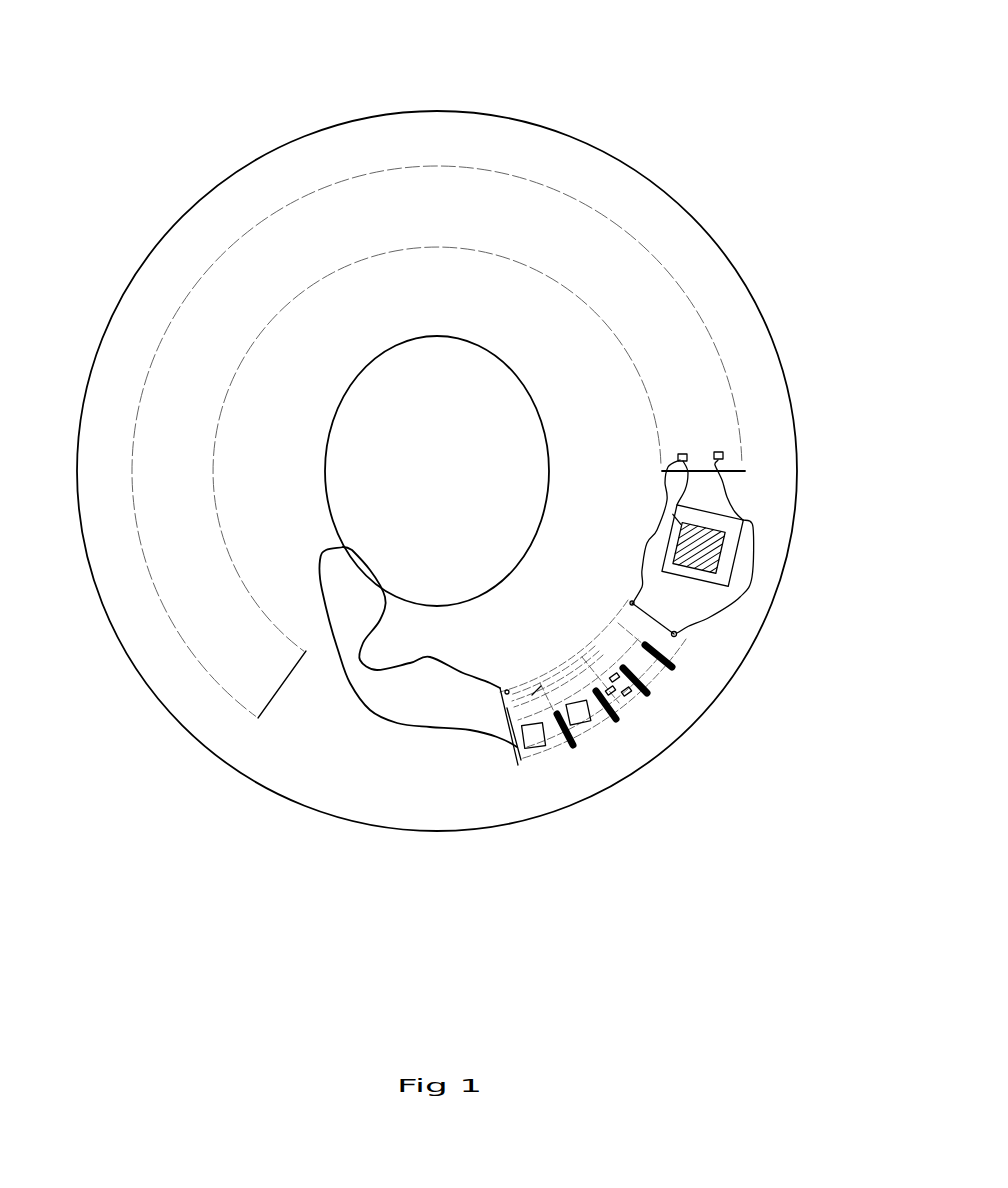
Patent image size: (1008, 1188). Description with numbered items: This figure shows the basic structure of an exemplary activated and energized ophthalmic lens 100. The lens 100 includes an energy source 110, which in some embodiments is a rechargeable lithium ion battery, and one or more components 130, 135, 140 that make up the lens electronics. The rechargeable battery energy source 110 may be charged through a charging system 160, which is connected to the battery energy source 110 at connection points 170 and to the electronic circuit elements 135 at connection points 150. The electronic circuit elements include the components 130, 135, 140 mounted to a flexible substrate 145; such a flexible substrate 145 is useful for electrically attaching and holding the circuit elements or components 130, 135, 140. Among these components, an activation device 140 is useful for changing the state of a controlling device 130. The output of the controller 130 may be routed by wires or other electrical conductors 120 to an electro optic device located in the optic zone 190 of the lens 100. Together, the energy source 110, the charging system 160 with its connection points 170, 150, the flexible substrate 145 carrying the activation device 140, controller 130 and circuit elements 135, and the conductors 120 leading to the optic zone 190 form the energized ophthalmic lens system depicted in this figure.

The energized ophthalmic lens 100 is at (255, 130).
The energy source 110 is at (222, 614).
The electrical conductors 120 is at (418, 730).
The controlling device 130 is at (530, 730).
The electronic circuit elements 135 is at (627, 698).
The activation device 140 is at (582, 722).
The flexible substrate 145 is at (660, 683).
The connection points 150 is at (676, 635).
The charging system 160 is at (676, 633).
The connection points 170 is at (718, 455).
The optic zone 190 is at (438, 335).